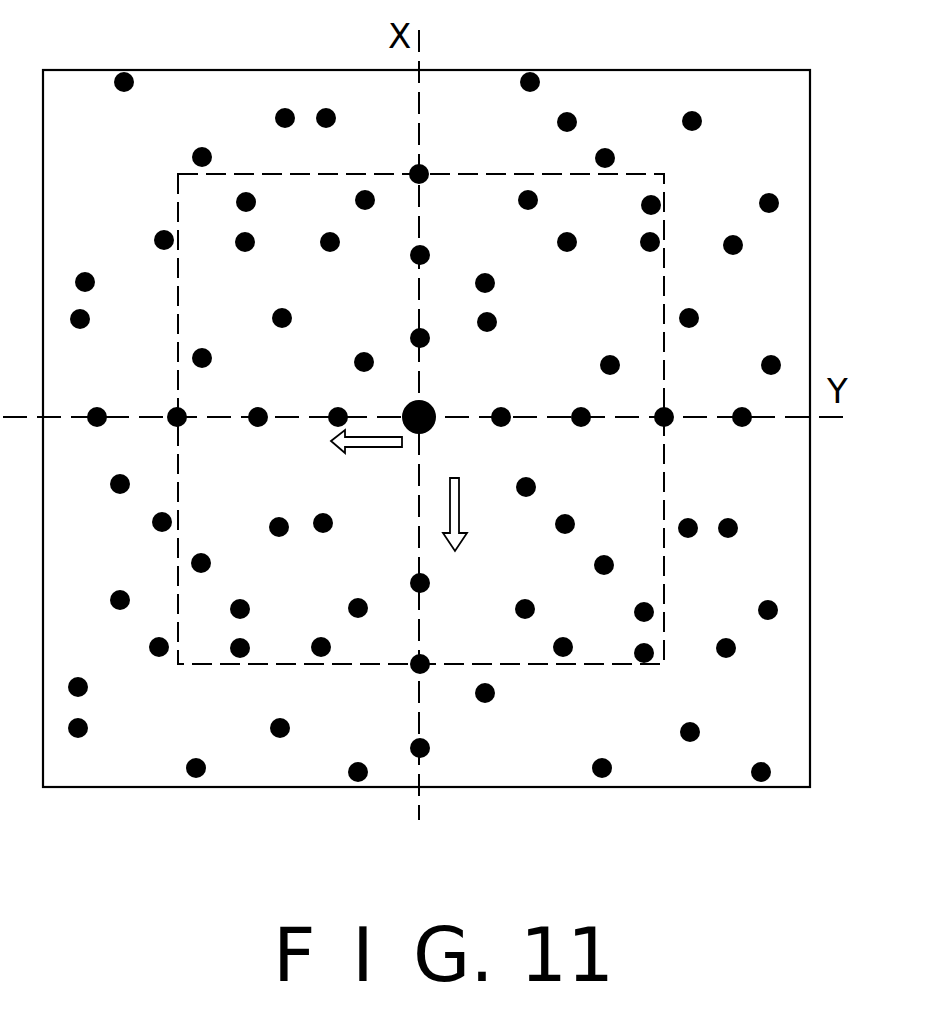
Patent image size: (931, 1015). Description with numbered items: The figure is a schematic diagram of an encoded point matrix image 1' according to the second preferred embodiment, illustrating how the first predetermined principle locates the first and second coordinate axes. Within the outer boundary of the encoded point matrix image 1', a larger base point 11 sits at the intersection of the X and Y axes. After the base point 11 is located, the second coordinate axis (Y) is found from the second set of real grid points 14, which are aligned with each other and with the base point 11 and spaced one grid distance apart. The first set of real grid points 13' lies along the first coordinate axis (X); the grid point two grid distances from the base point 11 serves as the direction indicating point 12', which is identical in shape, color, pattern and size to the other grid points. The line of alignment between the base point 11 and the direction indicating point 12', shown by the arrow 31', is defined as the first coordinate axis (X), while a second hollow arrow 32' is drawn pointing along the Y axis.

The encoded point matrix image 1' is at (464, 428).
The base point 11 is at (437, 410).
The direction indicating point 12' is at (334, 571).
The first set of real grid points 13' is at (363, 296).
The second set of real grid points 14 is at (333, 408).
The arrow 31' is at (512, 491).
The leftward direction arrow 32' is at (318, 469).